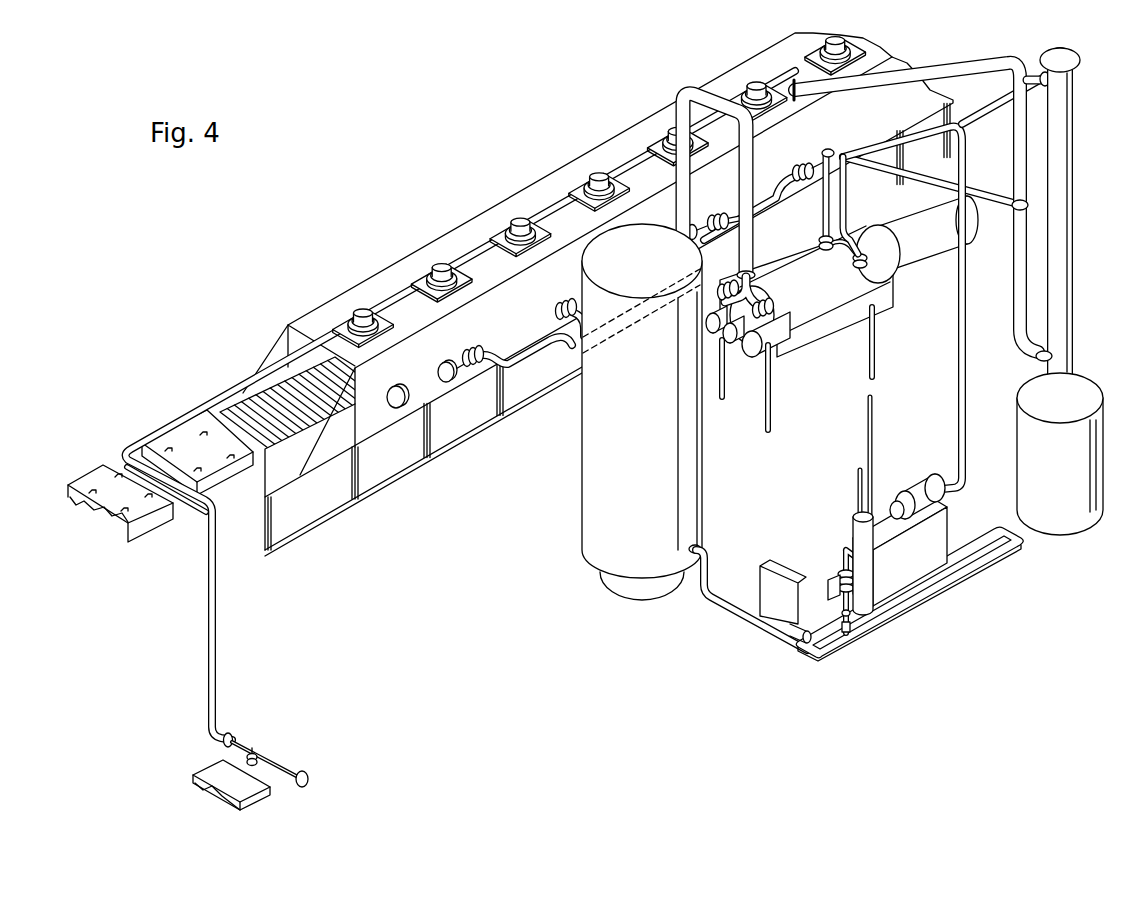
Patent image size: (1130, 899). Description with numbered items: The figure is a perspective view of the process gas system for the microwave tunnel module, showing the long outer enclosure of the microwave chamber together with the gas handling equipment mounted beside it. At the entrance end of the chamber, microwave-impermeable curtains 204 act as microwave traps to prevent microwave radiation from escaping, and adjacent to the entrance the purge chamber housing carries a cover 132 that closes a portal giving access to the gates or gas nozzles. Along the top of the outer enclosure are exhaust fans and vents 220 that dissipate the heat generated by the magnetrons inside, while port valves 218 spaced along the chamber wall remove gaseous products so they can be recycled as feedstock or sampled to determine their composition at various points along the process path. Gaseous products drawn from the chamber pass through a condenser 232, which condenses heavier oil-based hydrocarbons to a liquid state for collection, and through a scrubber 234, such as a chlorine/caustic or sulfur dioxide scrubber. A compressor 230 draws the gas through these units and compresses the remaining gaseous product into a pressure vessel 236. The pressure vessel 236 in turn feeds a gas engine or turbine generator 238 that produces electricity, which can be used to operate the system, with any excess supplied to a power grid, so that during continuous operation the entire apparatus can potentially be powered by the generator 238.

The cover 132 is at (175, 438).
The microwave-impermeable curtains 204 is at (262, 410).
The port valves 218 is at (470, 376).
The exhaust fans and vents 220 is at (438, 266).
The compressor 230 is at (925, 480).
The condenser 232 is at (775, 352).
The scrubber 234 is at (1037, 392).
The pressure vessel 236 is at (659, 443).
The generator 238 is at (232, 772).